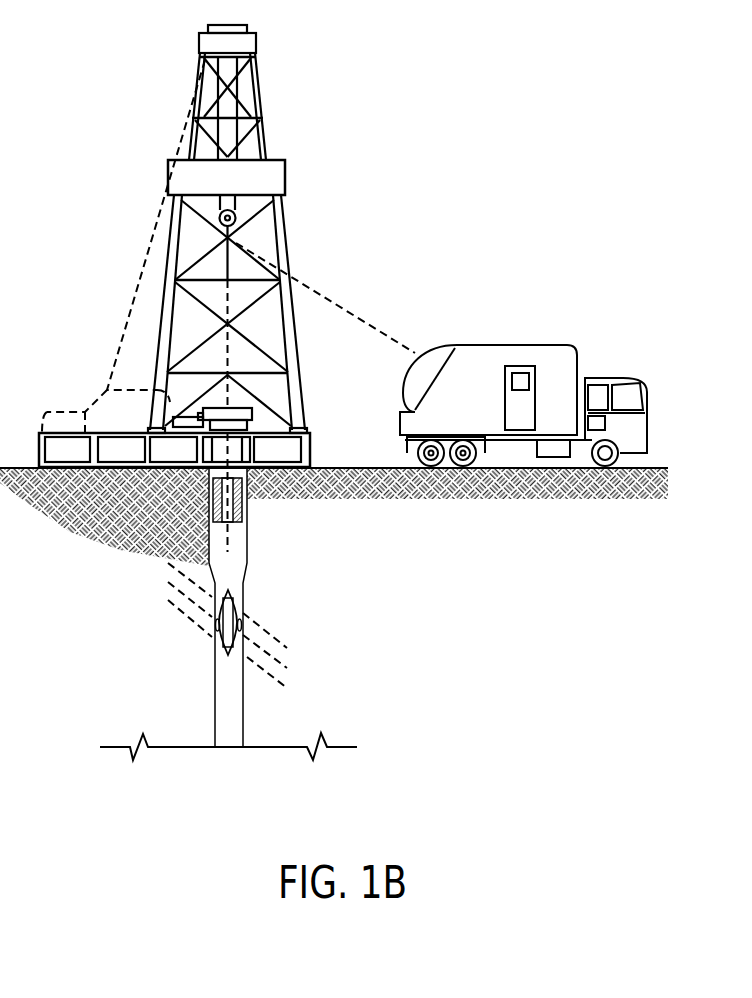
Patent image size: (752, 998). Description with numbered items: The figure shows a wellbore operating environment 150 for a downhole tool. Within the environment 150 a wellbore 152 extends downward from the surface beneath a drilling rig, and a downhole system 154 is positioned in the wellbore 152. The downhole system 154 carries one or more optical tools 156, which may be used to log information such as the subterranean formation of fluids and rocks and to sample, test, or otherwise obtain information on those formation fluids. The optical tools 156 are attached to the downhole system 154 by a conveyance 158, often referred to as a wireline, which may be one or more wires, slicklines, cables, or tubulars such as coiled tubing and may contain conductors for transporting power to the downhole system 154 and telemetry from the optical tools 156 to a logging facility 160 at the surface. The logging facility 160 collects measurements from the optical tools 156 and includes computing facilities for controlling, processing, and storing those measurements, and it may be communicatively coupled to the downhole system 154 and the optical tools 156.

The environment 150 is at (388, 146).
The wellbore 152 is at (233, 513).
The downhole system 154 is at (227, 610).
The optical tools 156 is at (215, 625).
The conveyance 158 is at (228, 552).
The logging facility 160 is at (512, 345).